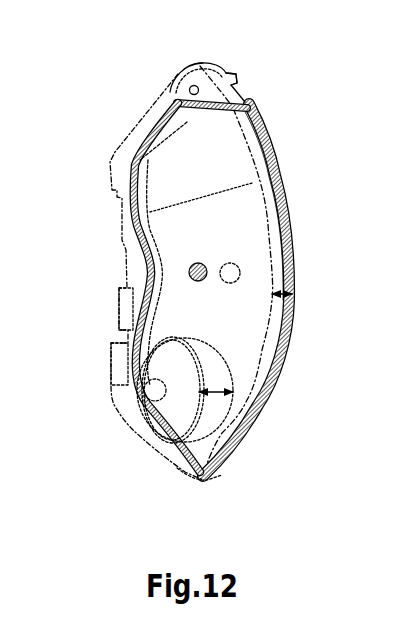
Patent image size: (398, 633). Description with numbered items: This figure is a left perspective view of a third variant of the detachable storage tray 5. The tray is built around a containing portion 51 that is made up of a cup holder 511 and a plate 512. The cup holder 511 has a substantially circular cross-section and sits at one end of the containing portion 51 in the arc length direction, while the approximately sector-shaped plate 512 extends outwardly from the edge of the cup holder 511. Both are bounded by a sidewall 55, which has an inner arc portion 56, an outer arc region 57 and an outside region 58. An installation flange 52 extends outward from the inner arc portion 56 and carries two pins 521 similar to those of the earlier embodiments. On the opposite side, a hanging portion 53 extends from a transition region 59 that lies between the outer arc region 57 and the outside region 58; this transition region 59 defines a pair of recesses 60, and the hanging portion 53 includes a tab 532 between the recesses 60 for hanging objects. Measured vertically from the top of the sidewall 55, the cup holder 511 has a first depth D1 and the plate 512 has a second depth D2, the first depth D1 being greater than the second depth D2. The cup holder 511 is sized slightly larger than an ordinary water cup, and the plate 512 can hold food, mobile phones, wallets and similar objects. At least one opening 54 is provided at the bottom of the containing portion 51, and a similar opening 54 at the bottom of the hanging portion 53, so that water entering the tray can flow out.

The detachable storage tray 5 is at (281, 115).
The containing portion 51 is at (143, 132).
The cup holder 511 is at (177, 393).
The plate 512 is at (158, 172).
The installation flange 52 is at (155, 273).
The pins 521 is at (127, 305).
The hanging portion 53 is at (178, 92).
The tab 532 is at (196, 64).
The opening 54 is at (198, 87).
The sidewall 55 is at (282, 192).
The inner arc portion 56 is at (110, 350).
The outer arc region 57 is at (289, 336).
The outside region 58 is at (153, 113).
The transition region 59 is at (198, 64).
The recesses 60 is at (233, 91).
The first depth D1 is at (215, 392).
The second depth D2 is at (290, 291).